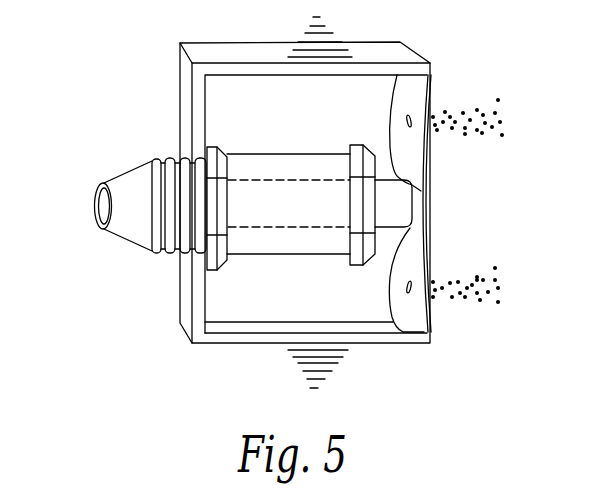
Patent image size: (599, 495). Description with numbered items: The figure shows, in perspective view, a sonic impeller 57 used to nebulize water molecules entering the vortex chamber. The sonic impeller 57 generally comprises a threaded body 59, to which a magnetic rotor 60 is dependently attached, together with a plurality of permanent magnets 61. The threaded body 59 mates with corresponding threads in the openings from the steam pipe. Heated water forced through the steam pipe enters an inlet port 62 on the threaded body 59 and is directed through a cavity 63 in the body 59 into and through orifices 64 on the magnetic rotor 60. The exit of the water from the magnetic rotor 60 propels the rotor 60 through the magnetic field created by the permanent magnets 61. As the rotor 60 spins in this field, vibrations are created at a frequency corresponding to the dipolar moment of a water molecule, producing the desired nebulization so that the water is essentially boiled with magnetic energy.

The sonic impeller 57 is at (130, 90).
The threaded body 59 is at (290, 257).
The magnetic rotor 60 is at (413, 160).
The permanent magnets 61 is at (253, 47).
The inlet port 62 is at (97, 210).
The cavity 63 is at (259, 180).
The orifices 64 is at (409, 124).